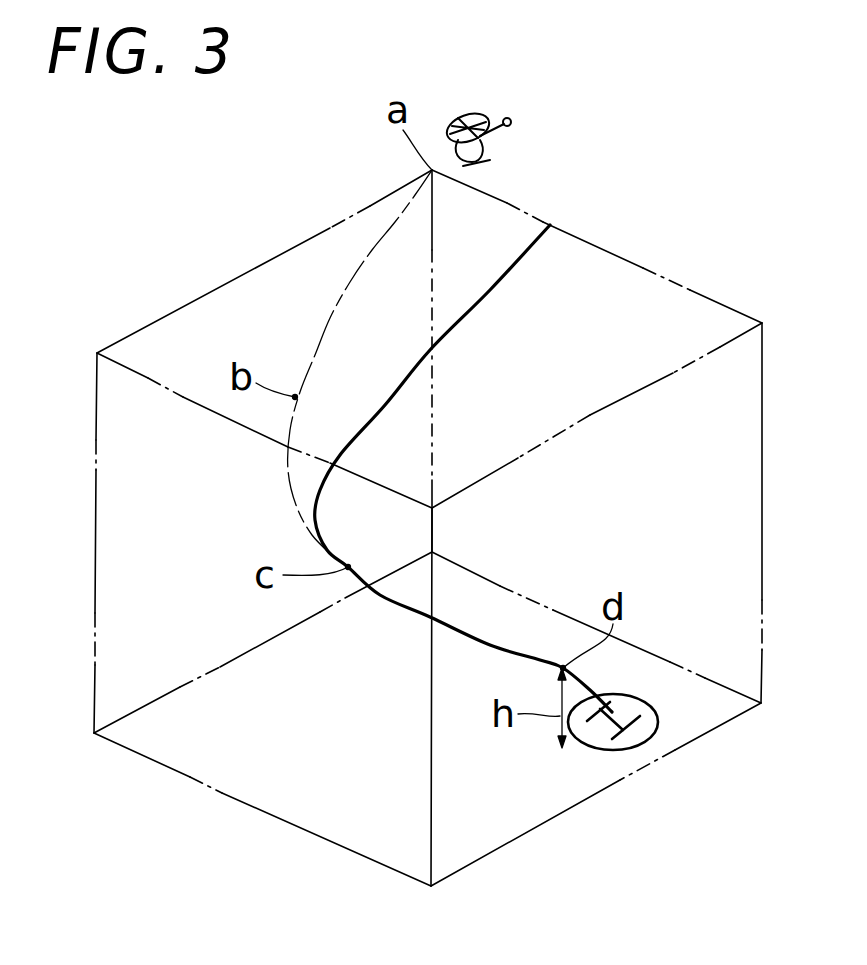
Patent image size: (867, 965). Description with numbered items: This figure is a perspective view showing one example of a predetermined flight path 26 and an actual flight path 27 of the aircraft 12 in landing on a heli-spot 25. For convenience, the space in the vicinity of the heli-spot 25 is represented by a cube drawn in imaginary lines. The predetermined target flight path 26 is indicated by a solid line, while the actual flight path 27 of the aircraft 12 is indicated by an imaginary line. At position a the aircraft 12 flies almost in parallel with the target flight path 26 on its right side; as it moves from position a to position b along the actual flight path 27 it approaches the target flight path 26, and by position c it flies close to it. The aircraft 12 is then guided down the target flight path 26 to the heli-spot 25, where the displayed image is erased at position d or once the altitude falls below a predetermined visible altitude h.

The aircraft 12 is at (492, 148).
The heli-spot 25 is at (630, 742).
The predetermined flight path 26 is at (523, 257).
The actual flight path 27 is at (345, 281).